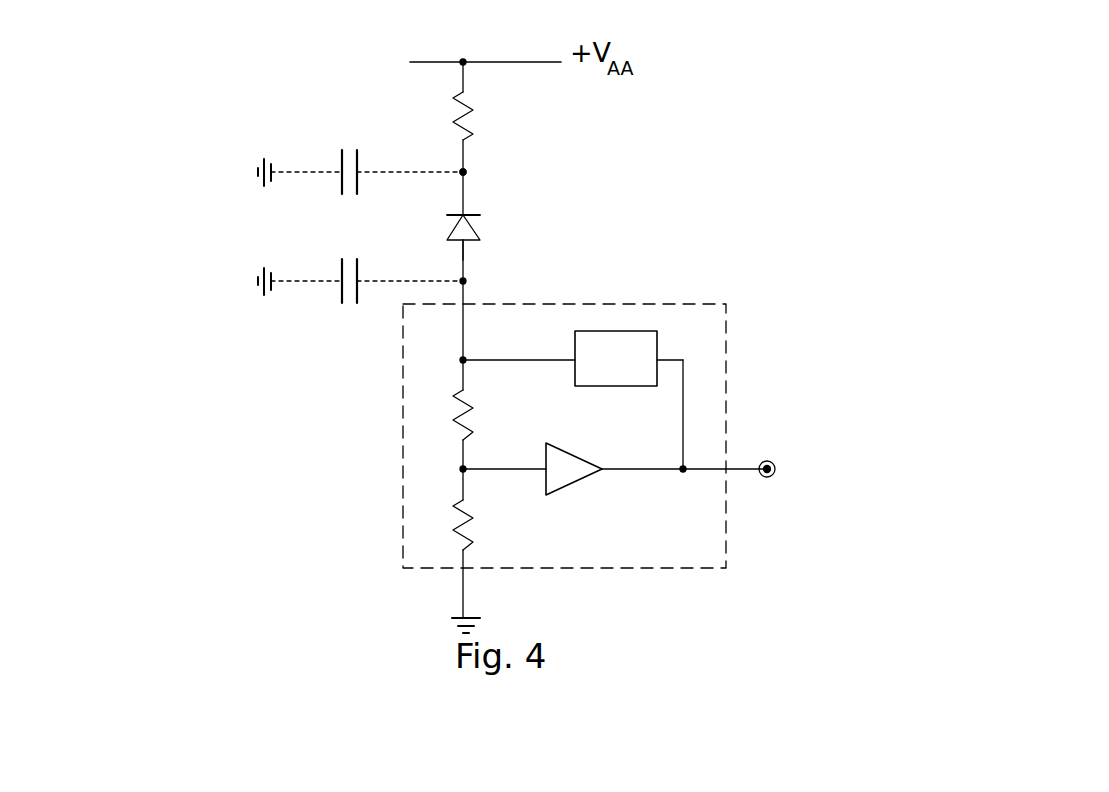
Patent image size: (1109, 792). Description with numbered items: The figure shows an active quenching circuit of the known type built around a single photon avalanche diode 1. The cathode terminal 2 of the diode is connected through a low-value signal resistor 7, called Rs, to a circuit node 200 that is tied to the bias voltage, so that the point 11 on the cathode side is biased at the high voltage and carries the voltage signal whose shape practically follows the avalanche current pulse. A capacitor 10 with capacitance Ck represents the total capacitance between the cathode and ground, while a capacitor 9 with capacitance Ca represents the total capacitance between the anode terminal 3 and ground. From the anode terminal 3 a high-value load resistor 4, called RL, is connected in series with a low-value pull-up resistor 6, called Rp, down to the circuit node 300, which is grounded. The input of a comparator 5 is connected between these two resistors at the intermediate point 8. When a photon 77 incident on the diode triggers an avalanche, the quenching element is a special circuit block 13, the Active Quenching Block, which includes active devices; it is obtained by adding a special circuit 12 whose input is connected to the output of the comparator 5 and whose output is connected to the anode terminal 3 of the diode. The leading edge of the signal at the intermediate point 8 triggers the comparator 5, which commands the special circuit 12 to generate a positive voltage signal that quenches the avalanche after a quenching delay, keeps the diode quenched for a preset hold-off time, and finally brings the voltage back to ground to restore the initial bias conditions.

The circuit node 200 is at (463, 82).
The signal resistor 7 is at (478, 124).
The point 11 is at (468, 170).
The cathode terminal 2 is at (470, 213).
The SPAD 1 is at (482, 229).
The anode terminal 3 is at (495, 248).
The capacitor 10 is at (340, 154).
The capacitor 9 is at (341, 300).
The photon 77 is at (469, 219).
The circuit block 13 is at (634, 304).
The special circuit 12 is at (592, 387).
The load resistor 4 is at (476, 418).
The intermediate point 8 is at (467, 463).
The comparator 5 is at (576, 446).
The pull-up resistor 6 is at (478, 530).
The circuit node 300 is at (462, 612).